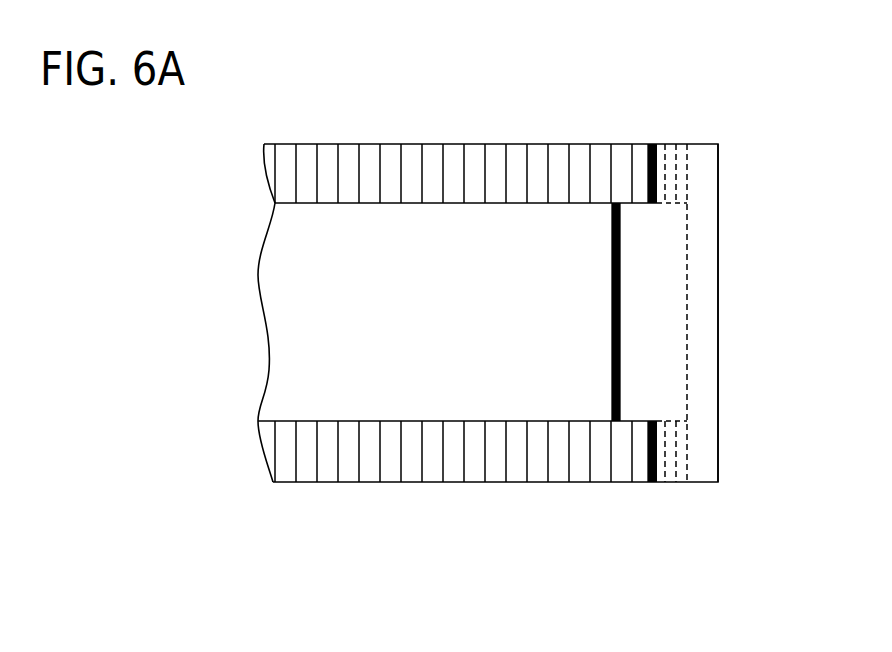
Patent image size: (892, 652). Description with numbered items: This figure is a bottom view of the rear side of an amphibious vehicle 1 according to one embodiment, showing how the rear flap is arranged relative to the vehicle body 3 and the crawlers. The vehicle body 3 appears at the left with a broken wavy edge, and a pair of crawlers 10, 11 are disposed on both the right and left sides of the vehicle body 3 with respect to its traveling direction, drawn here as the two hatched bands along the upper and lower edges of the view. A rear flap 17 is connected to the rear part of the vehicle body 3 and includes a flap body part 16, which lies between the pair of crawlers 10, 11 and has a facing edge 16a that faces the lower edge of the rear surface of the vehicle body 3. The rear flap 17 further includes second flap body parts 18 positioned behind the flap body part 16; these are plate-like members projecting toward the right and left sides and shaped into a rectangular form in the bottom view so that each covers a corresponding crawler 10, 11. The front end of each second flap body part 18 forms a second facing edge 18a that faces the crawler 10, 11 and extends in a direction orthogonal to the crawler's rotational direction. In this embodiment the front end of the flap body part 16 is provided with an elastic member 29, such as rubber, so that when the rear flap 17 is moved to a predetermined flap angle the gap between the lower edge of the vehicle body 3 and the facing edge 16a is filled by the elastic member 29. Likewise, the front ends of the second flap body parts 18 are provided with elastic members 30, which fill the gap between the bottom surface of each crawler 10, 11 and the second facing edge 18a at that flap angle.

The amphibious vehicle 1 is at (680, 88).
The vehicle body 3 is at (275, 279).
The crawler 10 is at (478, 470).
The crawler 11 is at (474, 156).
The flap body part 16 is at (628, 362).
The facing edge 16a is at (611, 252).
The rear flap 17 is at (718, 305).
The second flap body part 18 is at (703, 170).
The second facing edge 18a is at (647, 177).
The elastic member 29 is at (611, 311).
The elastic member 30 is at (648, 163).